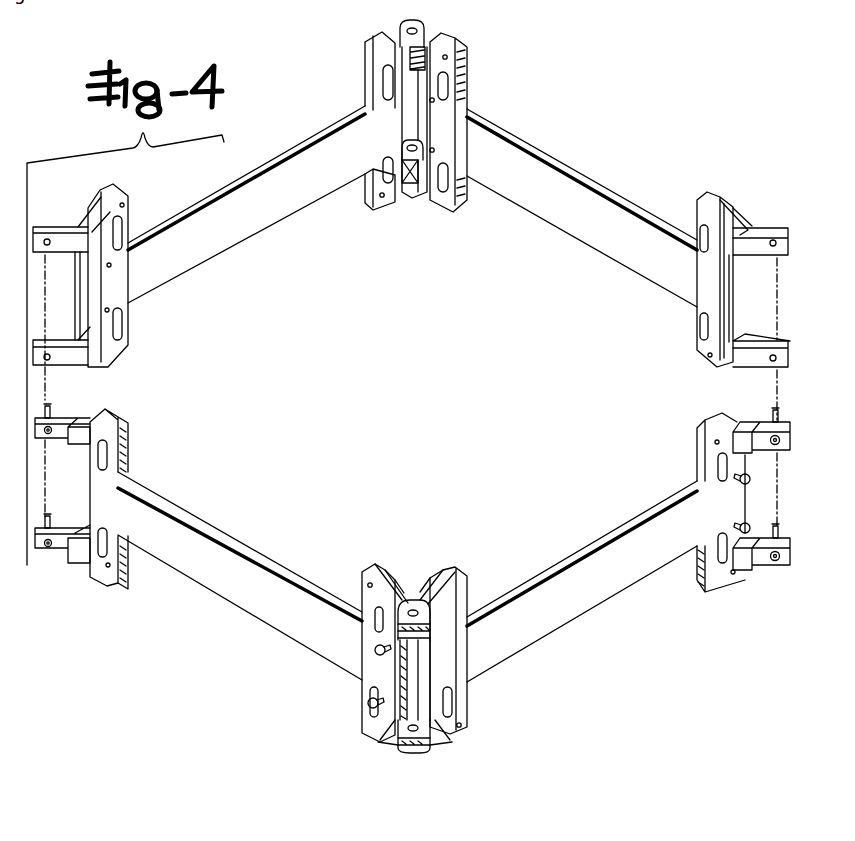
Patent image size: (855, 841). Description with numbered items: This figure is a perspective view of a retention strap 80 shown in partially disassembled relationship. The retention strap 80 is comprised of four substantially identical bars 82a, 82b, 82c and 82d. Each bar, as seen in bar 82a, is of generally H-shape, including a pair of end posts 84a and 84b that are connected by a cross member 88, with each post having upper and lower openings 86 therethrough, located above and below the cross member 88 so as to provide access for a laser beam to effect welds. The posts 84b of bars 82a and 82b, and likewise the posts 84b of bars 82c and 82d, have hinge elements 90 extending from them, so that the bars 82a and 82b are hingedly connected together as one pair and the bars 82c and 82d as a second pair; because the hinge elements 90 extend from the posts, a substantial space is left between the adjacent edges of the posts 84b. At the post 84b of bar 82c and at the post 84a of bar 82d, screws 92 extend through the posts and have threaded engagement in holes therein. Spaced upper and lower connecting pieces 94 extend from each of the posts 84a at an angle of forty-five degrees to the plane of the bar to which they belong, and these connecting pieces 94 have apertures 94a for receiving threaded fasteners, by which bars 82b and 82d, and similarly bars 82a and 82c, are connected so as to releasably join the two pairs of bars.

The retention strap 80 is at (615, 149).
The bar 82a is at (317, 219).
The bar 82b is at (611, 270).
The bar 82c is at (278, 527).
The bar 82d is at (616, 502).
The end post 84a is at (128, 197).
The end post 84b is at (367, 72).
The opening 86 is at (127, 227).
The cross member 88 is at (235, 232).
The hinge element 90 is at (432, 617).
The screw 92 is at (385, 705).
The connecting piece 94 is at (70, 288).
The aperture 94a is at (48, 240).